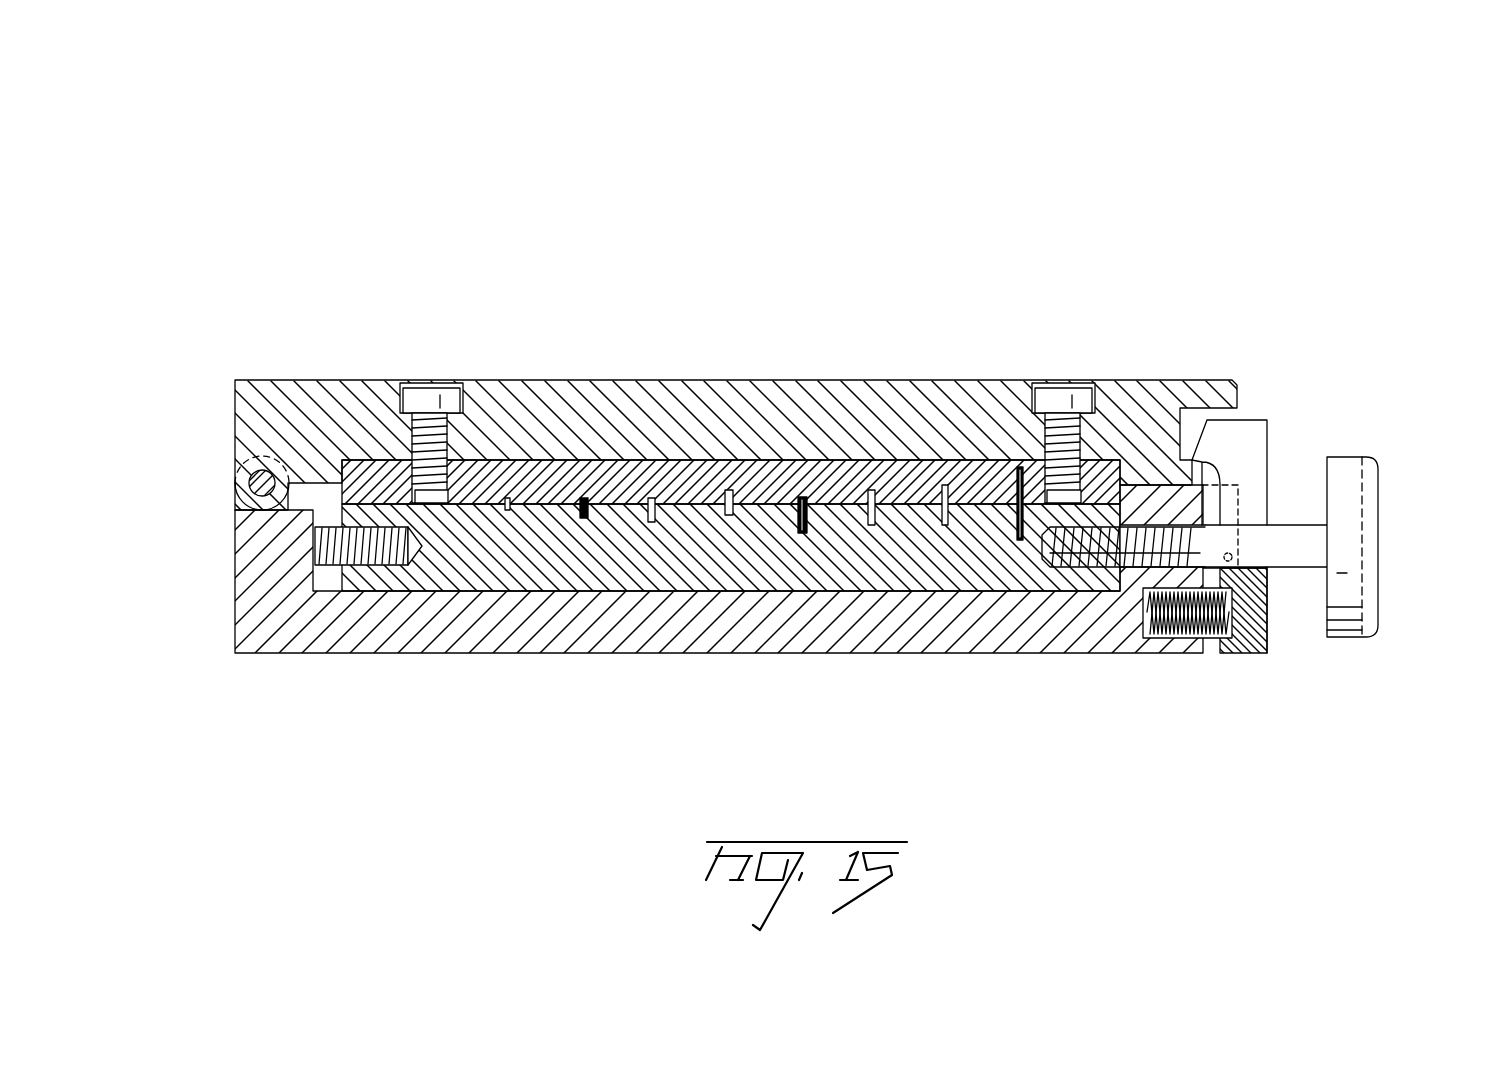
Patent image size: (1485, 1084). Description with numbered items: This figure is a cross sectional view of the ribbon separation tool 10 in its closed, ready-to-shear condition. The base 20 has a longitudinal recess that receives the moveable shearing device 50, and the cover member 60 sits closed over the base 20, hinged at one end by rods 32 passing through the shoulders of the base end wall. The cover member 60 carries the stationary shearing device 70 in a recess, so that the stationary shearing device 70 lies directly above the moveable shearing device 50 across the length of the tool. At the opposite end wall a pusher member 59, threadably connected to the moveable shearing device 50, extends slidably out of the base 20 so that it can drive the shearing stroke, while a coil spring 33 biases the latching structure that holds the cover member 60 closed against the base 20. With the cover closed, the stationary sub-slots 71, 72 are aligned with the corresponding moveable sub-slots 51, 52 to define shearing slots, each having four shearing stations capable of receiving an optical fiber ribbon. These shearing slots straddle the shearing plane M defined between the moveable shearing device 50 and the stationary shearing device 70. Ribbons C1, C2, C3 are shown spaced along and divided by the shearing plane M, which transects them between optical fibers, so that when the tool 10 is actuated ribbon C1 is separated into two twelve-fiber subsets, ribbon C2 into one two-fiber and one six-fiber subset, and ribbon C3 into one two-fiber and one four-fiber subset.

The ribbon separation tool 10 is at (966, 173).
The base 20 is at (1135, 655).
The rods 32 is at (250, 472).
The coil spring 33 is at (1205, 637).
The moveable shearing device 50 is at (763, 598).
The moveable shearing sub-slots 51 is at (1020, 548).
The moveable shearing sub-slots 52 is at (505, 545).
The pusher member 59 is at (1355, 478).
The cover member 60 is at (1142, 360).
The stationary shearing device 70 is at (754, 448).
The stationary sub-slots 71 is at (774, 487).
The stationary sub-slots 72 is at (745, 487).
The optical fiber ribbon C1 is at (1015, 513).
The optical fiber ribbon C2 is at (790, 507).
The optical fiber ribbon C3 is at (583, 509).
The shearing plane M is at (372, 502).